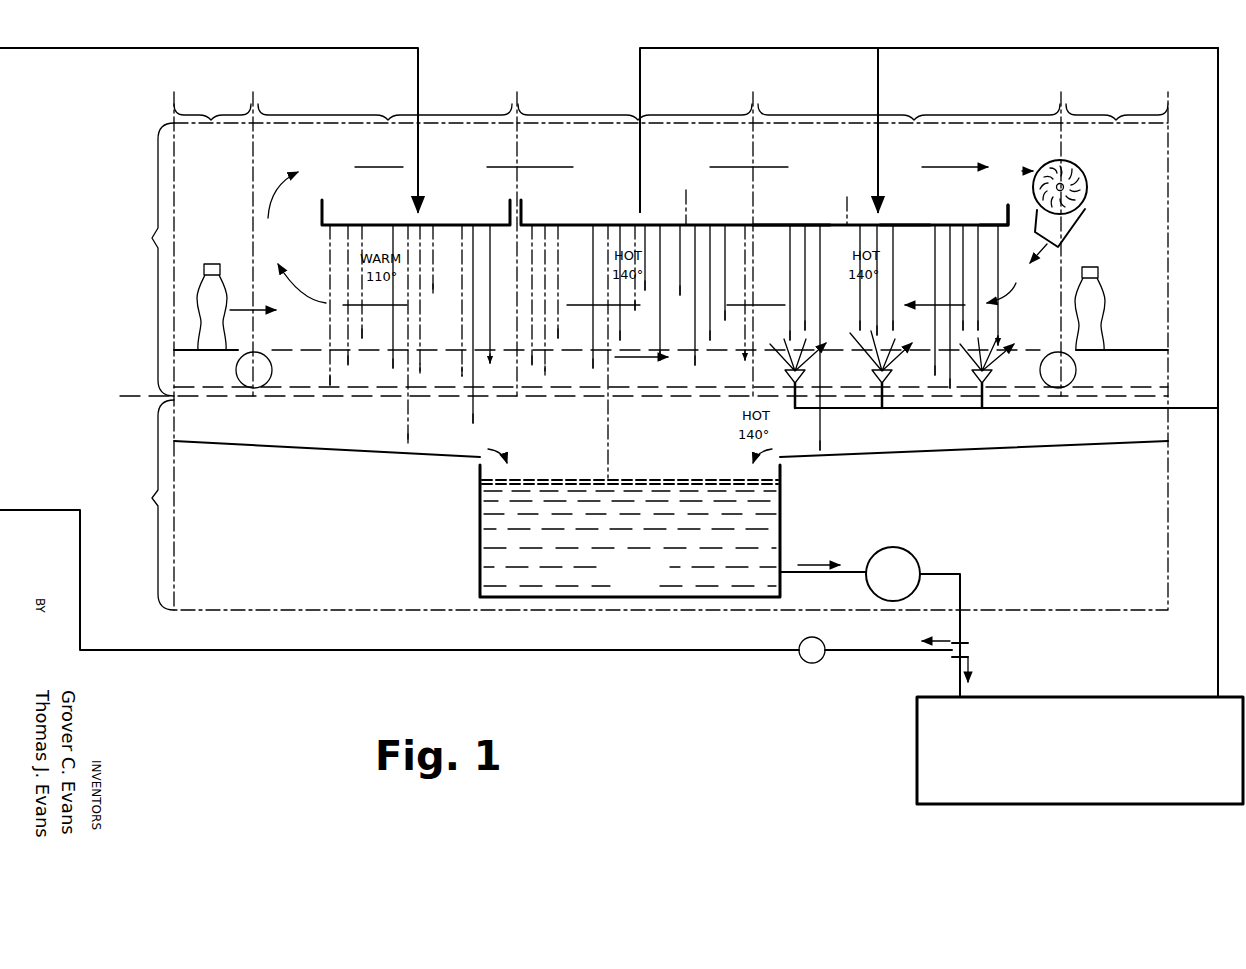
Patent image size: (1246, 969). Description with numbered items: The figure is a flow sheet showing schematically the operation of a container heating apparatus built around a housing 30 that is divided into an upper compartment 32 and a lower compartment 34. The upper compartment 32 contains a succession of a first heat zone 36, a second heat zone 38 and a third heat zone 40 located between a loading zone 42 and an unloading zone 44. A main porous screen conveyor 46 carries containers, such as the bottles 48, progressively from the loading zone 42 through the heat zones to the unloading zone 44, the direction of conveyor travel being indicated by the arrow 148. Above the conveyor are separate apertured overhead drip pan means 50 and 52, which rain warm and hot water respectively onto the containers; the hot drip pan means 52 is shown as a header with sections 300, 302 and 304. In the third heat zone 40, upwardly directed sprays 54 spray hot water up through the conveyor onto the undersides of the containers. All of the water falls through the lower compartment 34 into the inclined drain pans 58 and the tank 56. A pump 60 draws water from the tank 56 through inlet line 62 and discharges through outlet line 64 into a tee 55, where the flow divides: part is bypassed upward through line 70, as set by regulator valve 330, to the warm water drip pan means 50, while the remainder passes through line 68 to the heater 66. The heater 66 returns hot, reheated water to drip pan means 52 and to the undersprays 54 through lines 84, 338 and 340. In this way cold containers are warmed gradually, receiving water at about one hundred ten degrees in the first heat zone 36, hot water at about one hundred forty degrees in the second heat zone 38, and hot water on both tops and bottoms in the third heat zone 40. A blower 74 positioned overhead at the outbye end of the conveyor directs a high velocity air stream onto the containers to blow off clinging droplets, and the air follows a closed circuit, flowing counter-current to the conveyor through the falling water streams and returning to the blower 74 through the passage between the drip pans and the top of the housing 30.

The housing 30 is at (1052, 612).
The upper compartment 32 is at (98, 259).
The lower compartment 34 is at (98, 505).
The first heat zone 36 is at (385, 94).
The second heat zone 38 is at (635, 94).
The third heat zone 40 is at (909, 94).
The loading zone 42 is at (211, 76).
The unloading zone 44 is at (1117, 94).
The screen conveyor 46 is at (456, 350).
The bottles 48 is at (218, 263).
The drip pan means 50 is at (326, 204).
The drip pan means 52 is at (1005, 203).
The sprays 54 is at (876, 378).
The tee 55 is at (962, 650).
The tank 56 is at (646, 586).
The drain pans 58 is at (384, 452).
The pump 60 is at (908, 556).
The inlet line 62 is at (846, 580).
The outlet line 64 is at (963, 577).
The heater 66 is at (1053, 769).
The line 68 is at (958, 684).
The line 70 is at (227, 653).
The blower 74 is at (1086, 177).
The line 84 is at (1217, 580).
The conveyor travel direction 148 is at (660, 350).
The hot air spray header 300 is at (565, 225).
The hot air spray header section 302 is at (797, 225).
The hot air spray header section 304 is at (903, 225).
The valve 330 is at (811, 664).
The line 338 is at (1068, 410).
The line 340 is at (1018, 48).